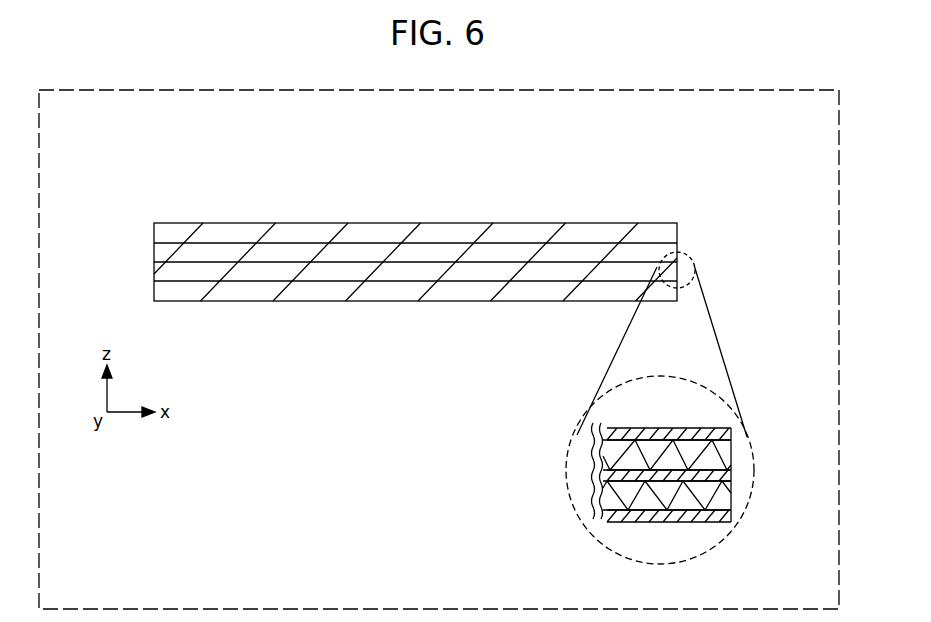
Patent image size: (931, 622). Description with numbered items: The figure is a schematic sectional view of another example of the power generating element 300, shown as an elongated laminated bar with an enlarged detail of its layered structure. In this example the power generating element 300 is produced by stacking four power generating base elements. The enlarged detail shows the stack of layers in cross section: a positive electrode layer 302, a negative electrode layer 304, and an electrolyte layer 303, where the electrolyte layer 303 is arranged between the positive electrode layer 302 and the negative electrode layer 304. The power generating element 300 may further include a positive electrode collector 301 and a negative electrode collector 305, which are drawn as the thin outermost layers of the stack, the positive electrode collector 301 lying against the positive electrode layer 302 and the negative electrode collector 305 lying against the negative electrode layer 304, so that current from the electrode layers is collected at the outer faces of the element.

The power generating element 300 is at (485, 152).
The positive electrode collector 301 is at (723, 433).
The positive electrode layer 302 is at (722, 448).
The electrolyte layer 303 is at (723, 477).
The negative electrode layer 304 is at (723, 497).
The negative electrode collector 305 is at (722, 520).